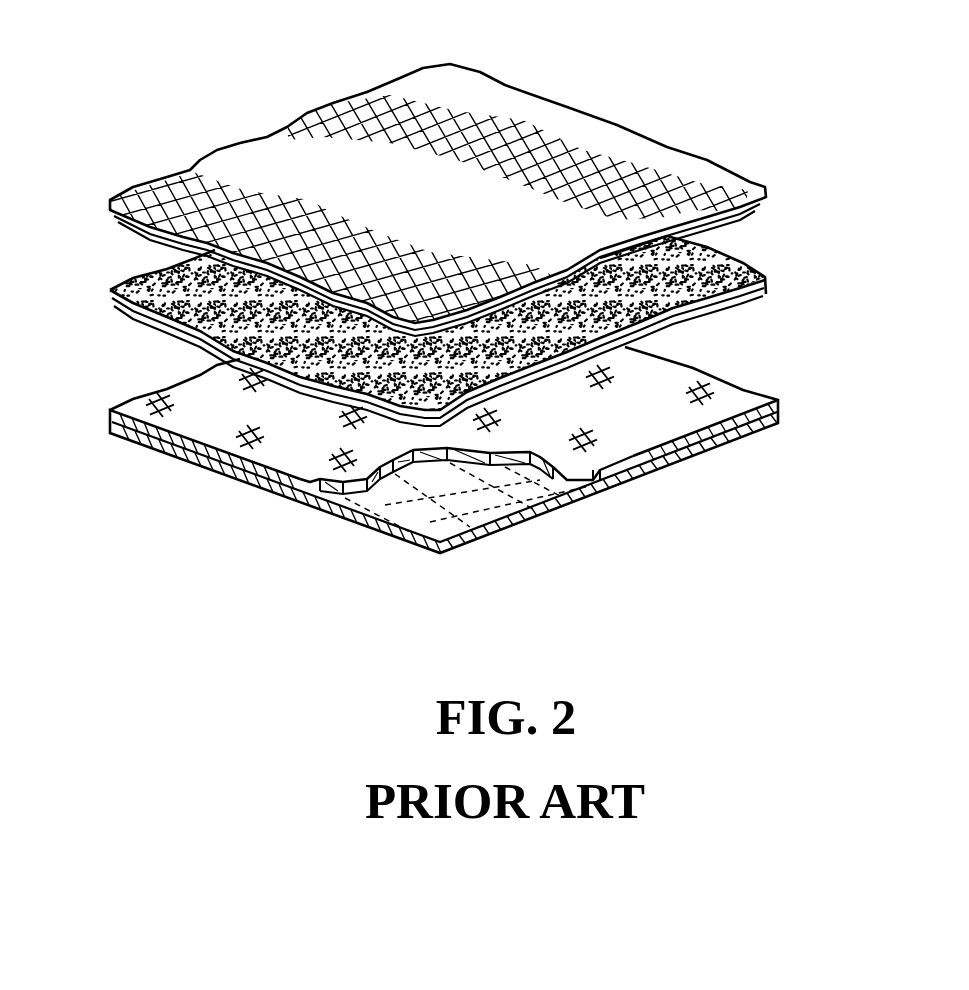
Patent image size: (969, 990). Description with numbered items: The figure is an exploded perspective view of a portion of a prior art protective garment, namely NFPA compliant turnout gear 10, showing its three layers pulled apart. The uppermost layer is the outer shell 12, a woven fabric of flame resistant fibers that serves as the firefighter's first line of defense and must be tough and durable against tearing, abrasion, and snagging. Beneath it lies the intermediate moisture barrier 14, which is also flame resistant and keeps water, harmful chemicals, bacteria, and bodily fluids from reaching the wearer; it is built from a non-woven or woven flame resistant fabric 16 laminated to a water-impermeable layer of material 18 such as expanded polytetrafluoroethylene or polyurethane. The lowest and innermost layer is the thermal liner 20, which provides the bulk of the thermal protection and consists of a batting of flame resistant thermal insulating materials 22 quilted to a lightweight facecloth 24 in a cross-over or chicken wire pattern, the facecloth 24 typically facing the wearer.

The turnout gear 10 is at (150, 93).
The outer shell 12 is at (683, 178).
The moisture barrier 14 is at (767, 243).
The flame resistant fabric 16 is at (761, 268).
The water-impermeable layer of material 18 is at (759, 299).
The thermal liner 20 is at (221, 476).
The batting of flame resistant thermal insulating materials 22 is at (652, 428).
The facecloth 24 is at (410, 527).